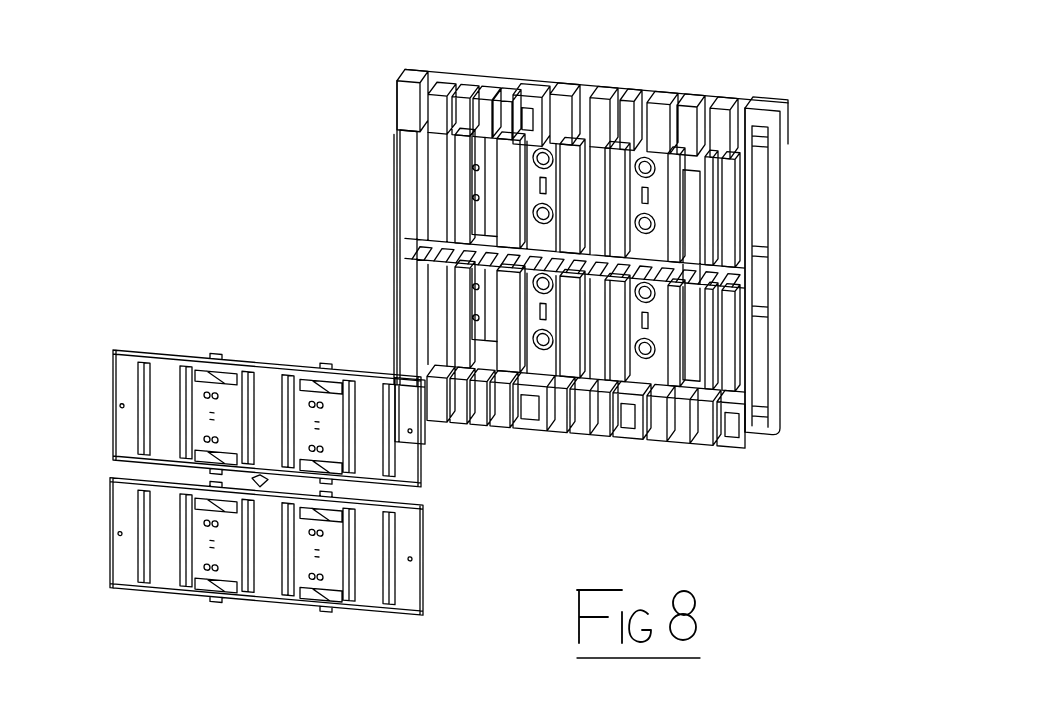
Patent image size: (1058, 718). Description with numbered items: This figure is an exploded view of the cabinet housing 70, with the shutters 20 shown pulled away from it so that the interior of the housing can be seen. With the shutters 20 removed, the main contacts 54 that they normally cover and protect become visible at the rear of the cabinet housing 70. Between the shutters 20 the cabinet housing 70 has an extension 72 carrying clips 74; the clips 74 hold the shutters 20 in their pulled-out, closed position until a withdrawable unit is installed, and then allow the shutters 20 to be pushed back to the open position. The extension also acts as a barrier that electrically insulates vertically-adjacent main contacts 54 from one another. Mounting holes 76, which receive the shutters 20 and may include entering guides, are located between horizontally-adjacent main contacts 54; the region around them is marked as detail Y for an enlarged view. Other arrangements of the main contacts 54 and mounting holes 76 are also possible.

The cabinet housing 70 is at (676, 61).
The mounting holes 76 is at (547, 210).
The main contacts 54 is at (715, 178).
The extension 72 is at (640, 266).
The clips 74 is at (653, 382).
The shutters 20 is at (100, 486).
The detail Y is at (732, 195).